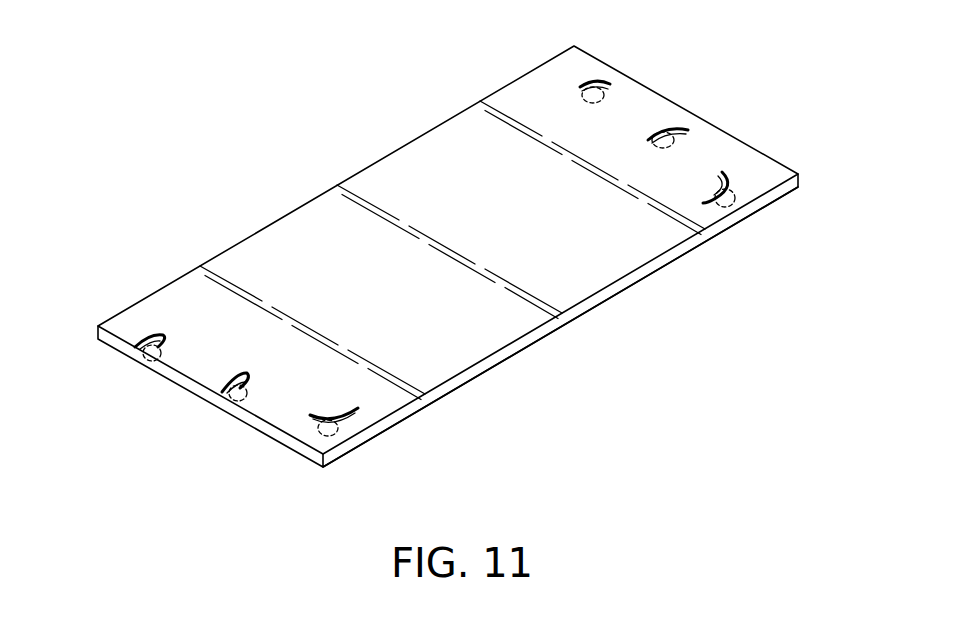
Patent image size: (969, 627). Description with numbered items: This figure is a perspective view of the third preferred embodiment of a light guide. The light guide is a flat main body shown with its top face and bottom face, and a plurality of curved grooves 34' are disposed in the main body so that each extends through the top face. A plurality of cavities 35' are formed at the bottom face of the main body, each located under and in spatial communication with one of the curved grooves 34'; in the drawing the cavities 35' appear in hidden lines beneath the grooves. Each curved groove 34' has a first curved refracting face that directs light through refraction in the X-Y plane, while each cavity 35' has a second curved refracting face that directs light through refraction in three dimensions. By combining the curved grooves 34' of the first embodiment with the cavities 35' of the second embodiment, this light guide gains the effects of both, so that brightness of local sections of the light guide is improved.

The curved grooves 34' is at (451, 267).
The cavities 35' is at (431, 283).